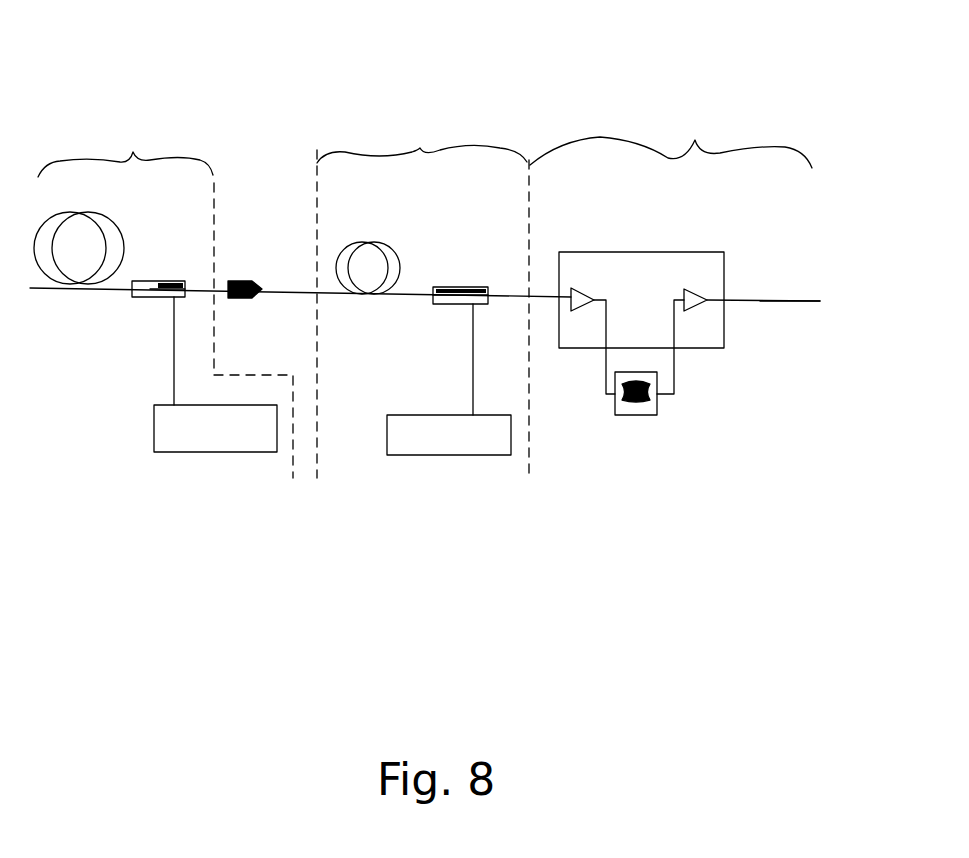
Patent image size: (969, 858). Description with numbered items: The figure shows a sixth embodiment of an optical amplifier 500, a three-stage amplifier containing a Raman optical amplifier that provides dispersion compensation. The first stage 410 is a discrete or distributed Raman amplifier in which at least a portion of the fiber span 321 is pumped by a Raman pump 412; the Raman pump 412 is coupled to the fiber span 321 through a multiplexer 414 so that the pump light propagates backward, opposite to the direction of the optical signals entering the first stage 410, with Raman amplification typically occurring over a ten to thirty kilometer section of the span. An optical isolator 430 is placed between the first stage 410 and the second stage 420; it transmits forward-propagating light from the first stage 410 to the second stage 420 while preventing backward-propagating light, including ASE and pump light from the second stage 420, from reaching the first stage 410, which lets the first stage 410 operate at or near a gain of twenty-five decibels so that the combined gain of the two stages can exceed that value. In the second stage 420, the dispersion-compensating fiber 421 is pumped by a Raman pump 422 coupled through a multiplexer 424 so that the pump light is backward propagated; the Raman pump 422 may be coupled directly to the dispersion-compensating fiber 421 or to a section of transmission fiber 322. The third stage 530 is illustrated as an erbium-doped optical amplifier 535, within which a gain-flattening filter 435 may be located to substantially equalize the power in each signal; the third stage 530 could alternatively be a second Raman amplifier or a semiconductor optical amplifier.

The optical amplifier 500 is at (470, 35).
The first stage 410 is at (133, 152).
The fiber span 321 is at (133, 205).
The multiplexer 414 is at (145, 300).
The Raman pump 412 is at (215, 431).
The optical isolator 430 is at (243, 280).
The second stage 420 is at (420, 148).
The dispersion-compensating fiber 421 is at (400, 238).
The multiplexer 424 is at (452, 310).
The Raman pump 422 is at (449, 437).
The third stage 530 is at (697, 140).
The erbium-doped optical amplifier 535 is at (668, 252).
The gain-flattening filter 435 is at (645, 415).
The transmission fiber 322 is at (785, 302).